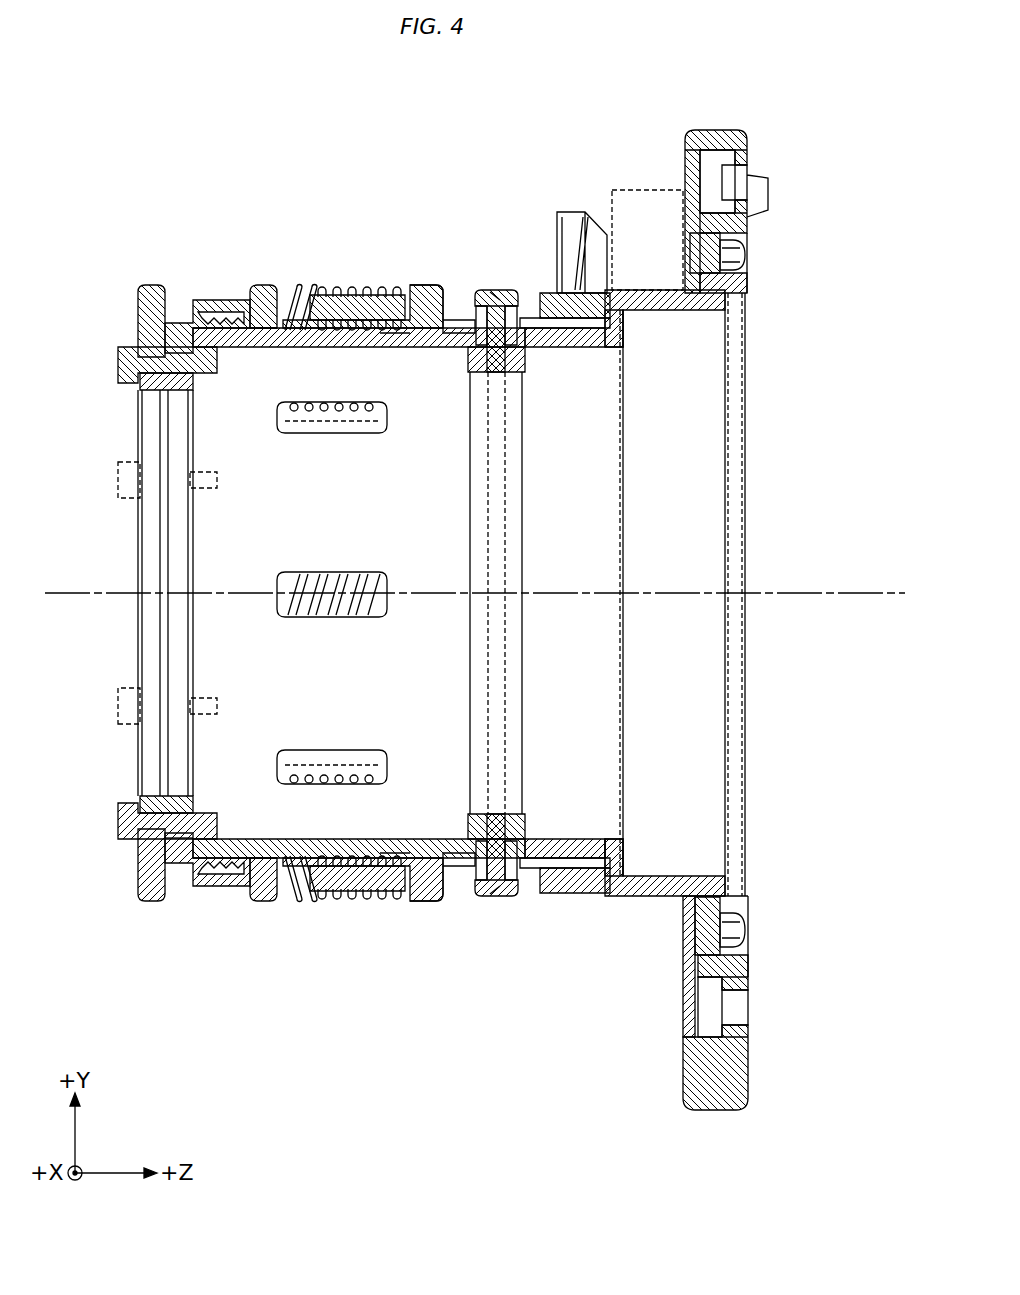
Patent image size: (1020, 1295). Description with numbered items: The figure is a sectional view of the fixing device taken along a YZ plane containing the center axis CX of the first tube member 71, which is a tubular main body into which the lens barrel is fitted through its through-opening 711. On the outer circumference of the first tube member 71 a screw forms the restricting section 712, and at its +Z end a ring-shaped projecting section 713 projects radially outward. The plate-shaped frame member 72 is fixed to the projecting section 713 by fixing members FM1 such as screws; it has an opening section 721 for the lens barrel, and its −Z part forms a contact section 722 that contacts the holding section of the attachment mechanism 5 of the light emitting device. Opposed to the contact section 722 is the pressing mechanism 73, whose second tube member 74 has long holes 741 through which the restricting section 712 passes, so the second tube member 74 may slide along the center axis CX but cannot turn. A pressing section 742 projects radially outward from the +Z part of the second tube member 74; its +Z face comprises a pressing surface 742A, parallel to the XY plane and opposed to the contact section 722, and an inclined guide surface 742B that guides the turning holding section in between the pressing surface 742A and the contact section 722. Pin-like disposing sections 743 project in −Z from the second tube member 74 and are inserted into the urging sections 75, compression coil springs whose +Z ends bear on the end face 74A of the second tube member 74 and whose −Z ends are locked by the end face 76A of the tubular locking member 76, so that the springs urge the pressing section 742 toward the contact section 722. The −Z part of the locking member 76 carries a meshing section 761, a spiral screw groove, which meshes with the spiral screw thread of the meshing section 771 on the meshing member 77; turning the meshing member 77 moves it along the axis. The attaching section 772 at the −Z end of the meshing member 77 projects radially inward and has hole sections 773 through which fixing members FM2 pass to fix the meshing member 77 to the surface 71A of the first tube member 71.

The center axis CX is at (830, 593).
The attachment mechanism 5 is at (645, 190).
The first tube member 71 is at (735, 370).
The through-opening 711 is at (690, 878).
The restricting section 712 is at (493, 290).
The projecting section 713 is at (722, 250).
The surface in the −Z direction of the first tube member 71A is at (165, 852).
The frame member 72 is at (712, 128).
The opening section 721 is at (743, 285).
The contact section 722 is at (640, 295).
The pressing mechanism 73 is at (432, 197).
The second tube member 74 is at (425, 285).
The end face 74A is at (392, 335).
The long hole 741 is at (470, 330).
The pressing section 742 is at (568, 215).
The pressing surface 742A is at (628, 312).
The guide surface 742B is at (578, 320).
The disposing section 743 is at (300, 288).
The urging section 75 is at (320, 290).
The locking member 76 is at (258, 285).
The end face 76A is at (266, 330).
The meshing section 761 is at (222, 350).
The meshing member 77 is at (150, 285).
The meshing section 771 is at (185, 302).
The attaching section 772 is at (138, 320).
The hole sections 773 is at (118, 357).
The fixing members FM1 is at (745, 255).
The fixing members FM2 is at (118, 470).